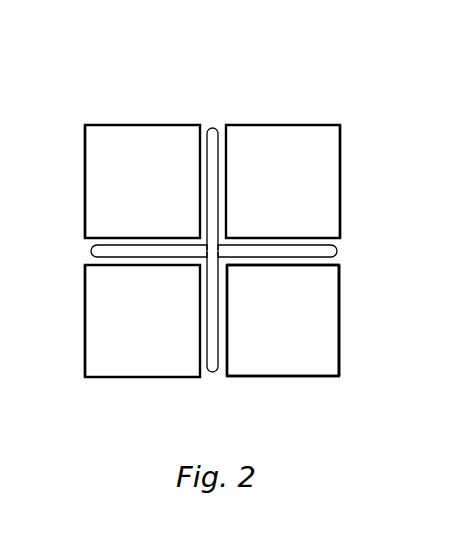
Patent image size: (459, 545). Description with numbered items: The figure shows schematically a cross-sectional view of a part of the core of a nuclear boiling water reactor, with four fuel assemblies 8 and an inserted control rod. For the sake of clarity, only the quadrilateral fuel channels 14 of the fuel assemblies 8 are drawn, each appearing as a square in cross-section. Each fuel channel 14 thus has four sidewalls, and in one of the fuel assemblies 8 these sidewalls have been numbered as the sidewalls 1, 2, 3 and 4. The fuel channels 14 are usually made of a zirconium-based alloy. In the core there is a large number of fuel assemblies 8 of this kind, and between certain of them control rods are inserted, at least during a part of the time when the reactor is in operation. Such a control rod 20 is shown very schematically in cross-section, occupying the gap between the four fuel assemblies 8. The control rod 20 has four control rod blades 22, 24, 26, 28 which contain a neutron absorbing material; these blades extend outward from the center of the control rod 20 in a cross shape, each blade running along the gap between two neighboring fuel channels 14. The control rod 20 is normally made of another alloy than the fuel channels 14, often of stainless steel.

The sidewall 1 is at (228, 310).
The sidewall 2 is at (274, 375).
The sidewall 3 is at (343, 318).
The sidewall 4 is at (302, 266).
The fuel assembly 8 is at (147, 142).
The fuel channel 14 is at (84, 172).
The control rod 20 is at (213, 205).
The control rod blade 22 is at (213, 142).
The control rod blade 24 is at (90, 251).
The control rod blade 26 is at (213, 353).
The control rod blade 28 is at (337, 251).